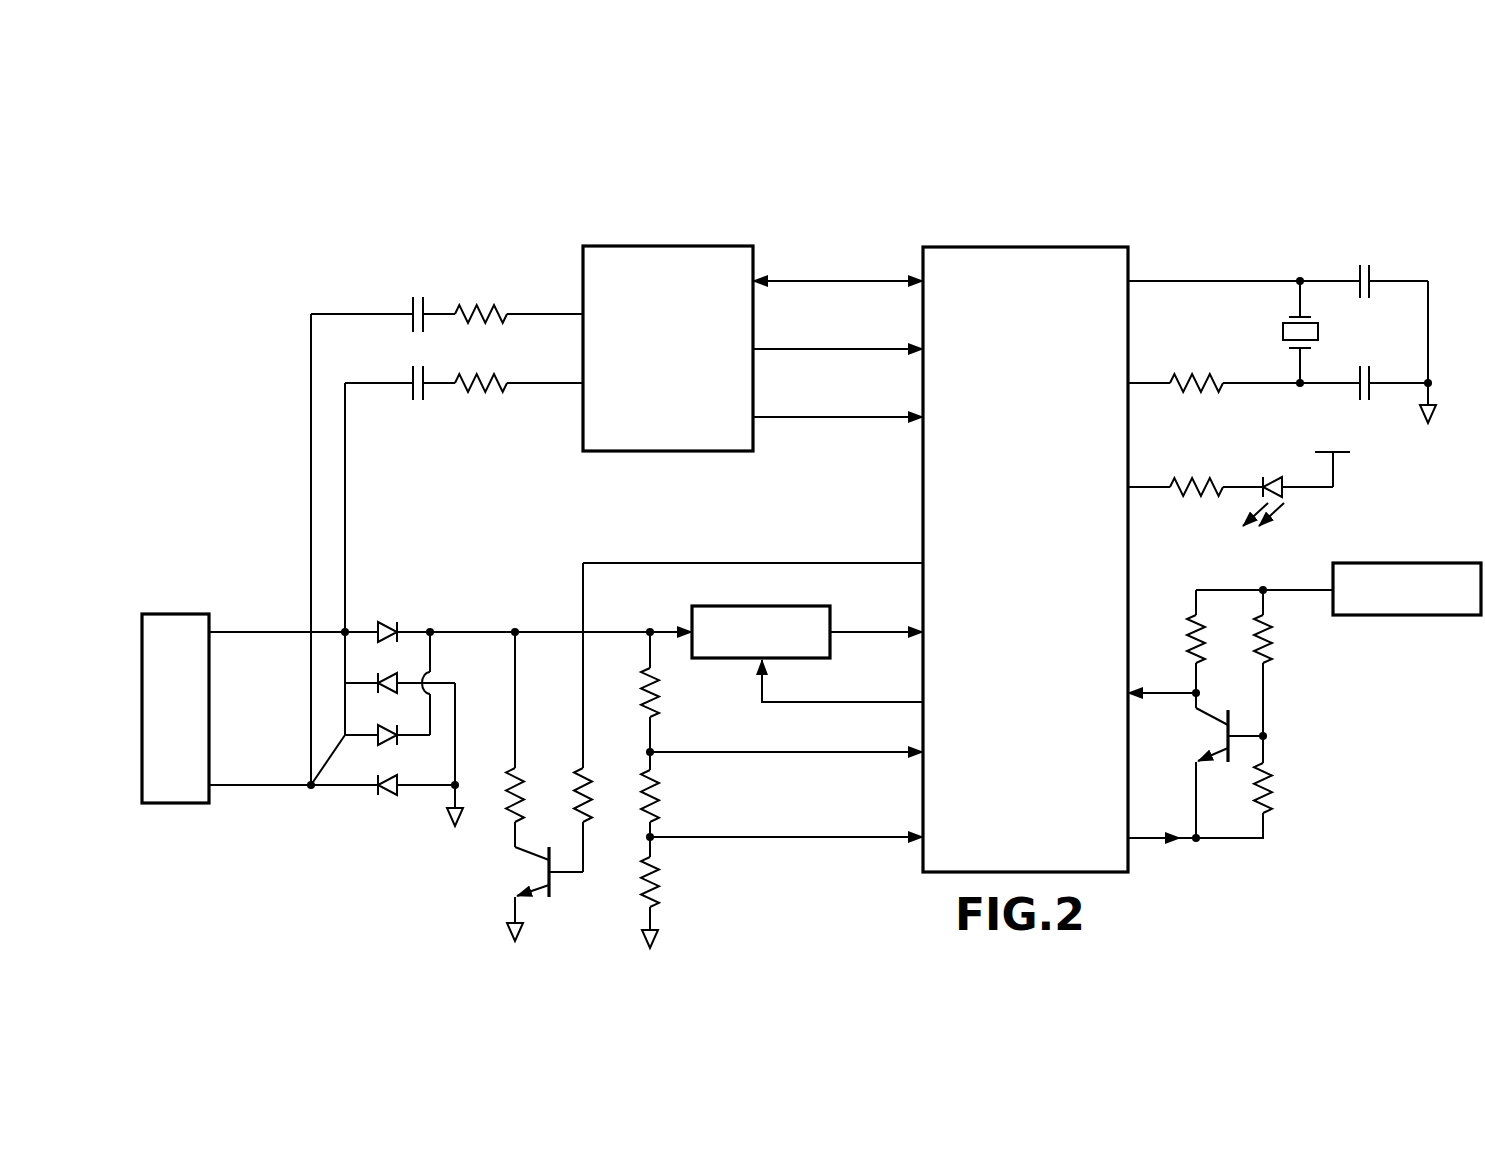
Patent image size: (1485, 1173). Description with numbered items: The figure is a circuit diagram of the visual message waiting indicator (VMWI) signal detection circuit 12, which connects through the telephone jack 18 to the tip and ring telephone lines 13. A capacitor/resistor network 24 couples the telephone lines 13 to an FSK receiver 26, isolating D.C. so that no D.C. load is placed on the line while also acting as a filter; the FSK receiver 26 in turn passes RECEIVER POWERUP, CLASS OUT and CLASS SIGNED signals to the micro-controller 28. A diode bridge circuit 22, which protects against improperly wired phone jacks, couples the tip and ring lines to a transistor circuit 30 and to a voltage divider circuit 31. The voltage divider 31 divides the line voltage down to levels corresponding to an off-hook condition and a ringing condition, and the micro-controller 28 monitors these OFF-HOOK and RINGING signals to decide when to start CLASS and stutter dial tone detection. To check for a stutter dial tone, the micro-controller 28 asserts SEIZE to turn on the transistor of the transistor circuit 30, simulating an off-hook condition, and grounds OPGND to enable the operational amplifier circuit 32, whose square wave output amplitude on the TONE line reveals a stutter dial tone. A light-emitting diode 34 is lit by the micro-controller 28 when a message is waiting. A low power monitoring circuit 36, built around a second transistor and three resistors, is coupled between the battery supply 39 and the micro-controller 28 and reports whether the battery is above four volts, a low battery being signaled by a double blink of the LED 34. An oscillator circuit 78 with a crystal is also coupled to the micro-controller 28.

The VMWI signal detection circuit 12 is at (1145, 184).
The telephone lines 13 is at (258, 634).
The telephone jack 18 is at (160, 714).
The diode bridge circuit 22 is at (368, 820).
The capacitor/resistor network 24 is at (440, 284).
The FSK receiver 26 is at (653, 391).
The micro-controller 28 is at (1010, 569).
The transistor circuit 30 is at (478, 878).
The voltage divider circuit 31 is at (702, 886).
The operational amplifier circuit 32 is at (716, 660).
The light-emitting diode 34 is at (1276, 497).
The low power monitoring circuit 36 is at (1328, 716).
The battery supply 39 is at (1437, 562).
The oscillator circuit 78 is at (1348, 250).